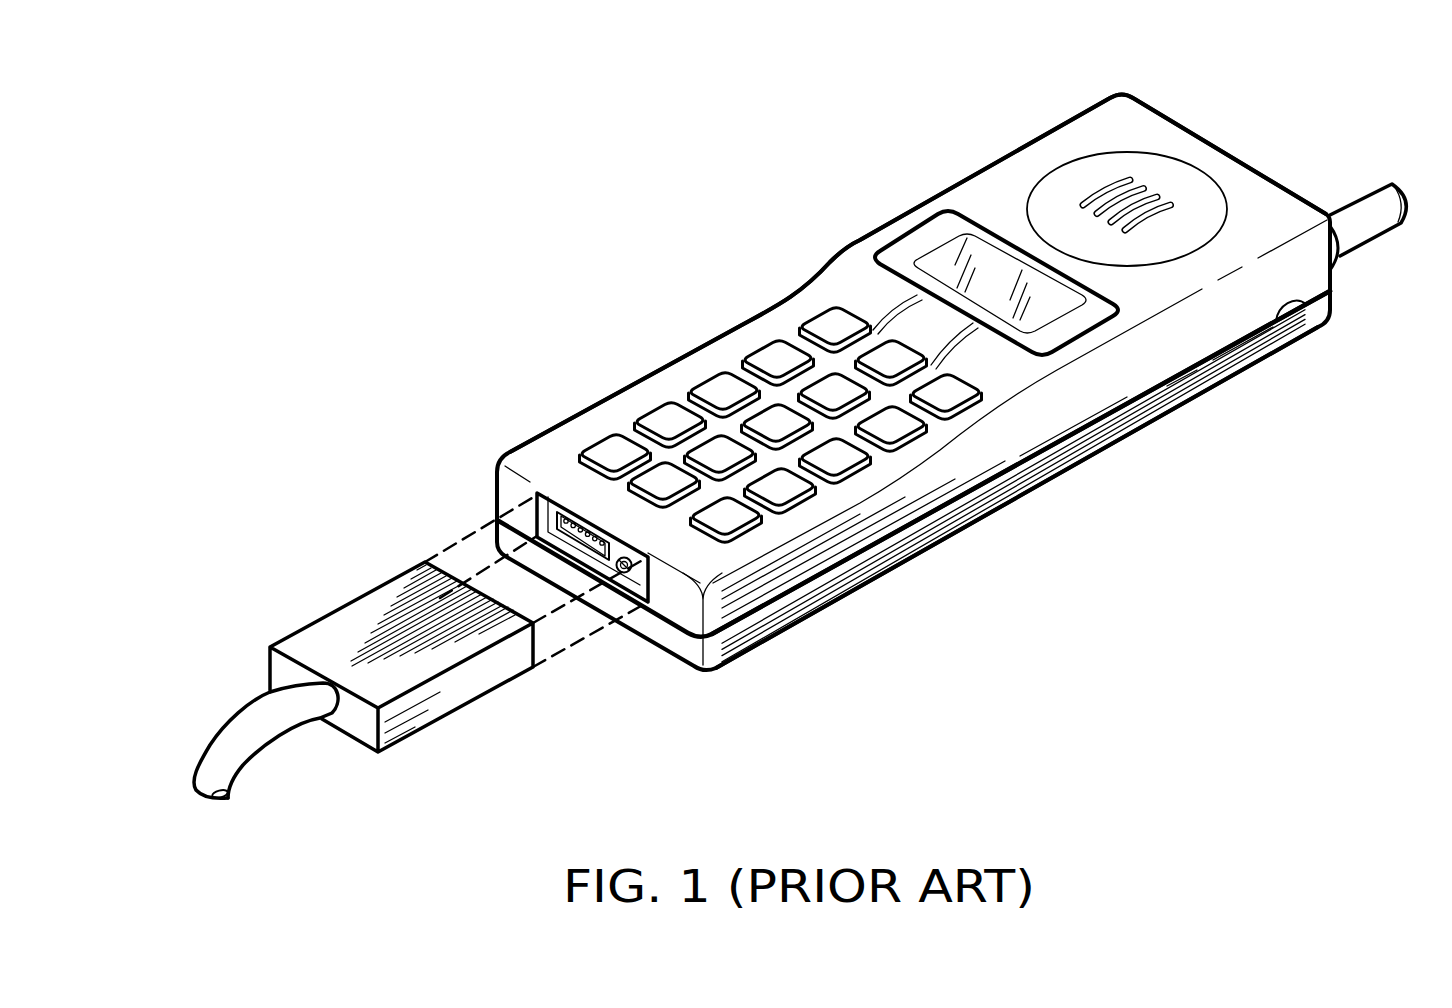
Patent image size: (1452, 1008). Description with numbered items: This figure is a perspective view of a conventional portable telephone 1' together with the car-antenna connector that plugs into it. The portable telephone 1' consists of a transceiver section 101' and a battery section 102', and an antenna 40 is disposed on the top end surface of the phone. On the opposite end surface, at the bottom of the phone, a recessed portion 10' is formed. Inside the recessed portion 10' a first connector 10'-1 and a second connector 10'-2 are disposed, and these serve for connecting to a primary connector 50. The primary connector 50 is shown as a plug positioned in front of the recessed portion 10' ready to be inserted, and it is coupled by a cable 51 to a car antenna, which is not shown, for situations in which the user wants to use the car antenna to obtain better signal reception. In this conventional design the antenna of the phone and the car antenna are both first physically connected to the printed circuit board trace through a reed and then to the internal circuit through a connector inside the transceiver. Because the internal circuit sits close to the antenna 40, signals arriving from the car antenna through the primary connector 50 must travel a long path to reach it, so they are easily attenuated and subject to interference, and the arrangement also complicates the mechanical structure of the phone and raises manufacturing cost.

The portable telephone 1' is at (831, 383).
The transceiver section 101' is at (918, 260).
The battery section 102' is at (1067, 466).
The antenna 40 is at (1385, 184).
The recessed portion 10' is at (546, 501).
The first connector 10'-1 is at (478, 532).
The second connector 10'-2 is at (695, 656).
The primary connector 50 is at (316, 595).
The cable 51 is at (253, 727).